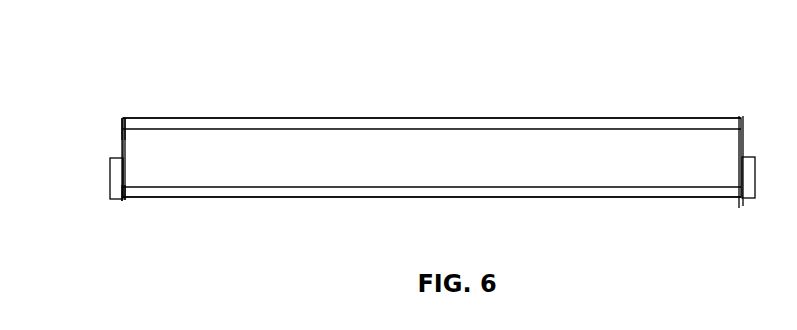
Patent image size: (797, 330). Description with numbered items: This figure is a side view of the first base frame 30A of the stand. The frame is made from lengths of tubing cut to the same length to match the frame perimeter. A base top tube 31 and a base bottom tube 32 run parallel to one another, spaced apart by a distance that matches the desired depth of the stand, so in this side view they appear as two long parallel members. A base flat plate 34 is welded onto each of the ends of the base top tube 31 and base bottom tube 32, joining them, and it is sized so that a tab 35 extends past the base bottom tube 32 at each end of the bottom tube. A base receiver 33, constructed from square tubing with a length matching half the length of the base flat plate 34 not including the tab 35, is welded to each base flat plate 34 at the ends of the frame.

The first base frame 30A is at (480, 98).
The base top tube 31 is at (356, 119).
The base bottom tube 32 is at (322, 197).
The base receiver 33 is at (114, 178).
The base flat plate 34 is at (122, 131).
The tab 35 is at (123, 202).